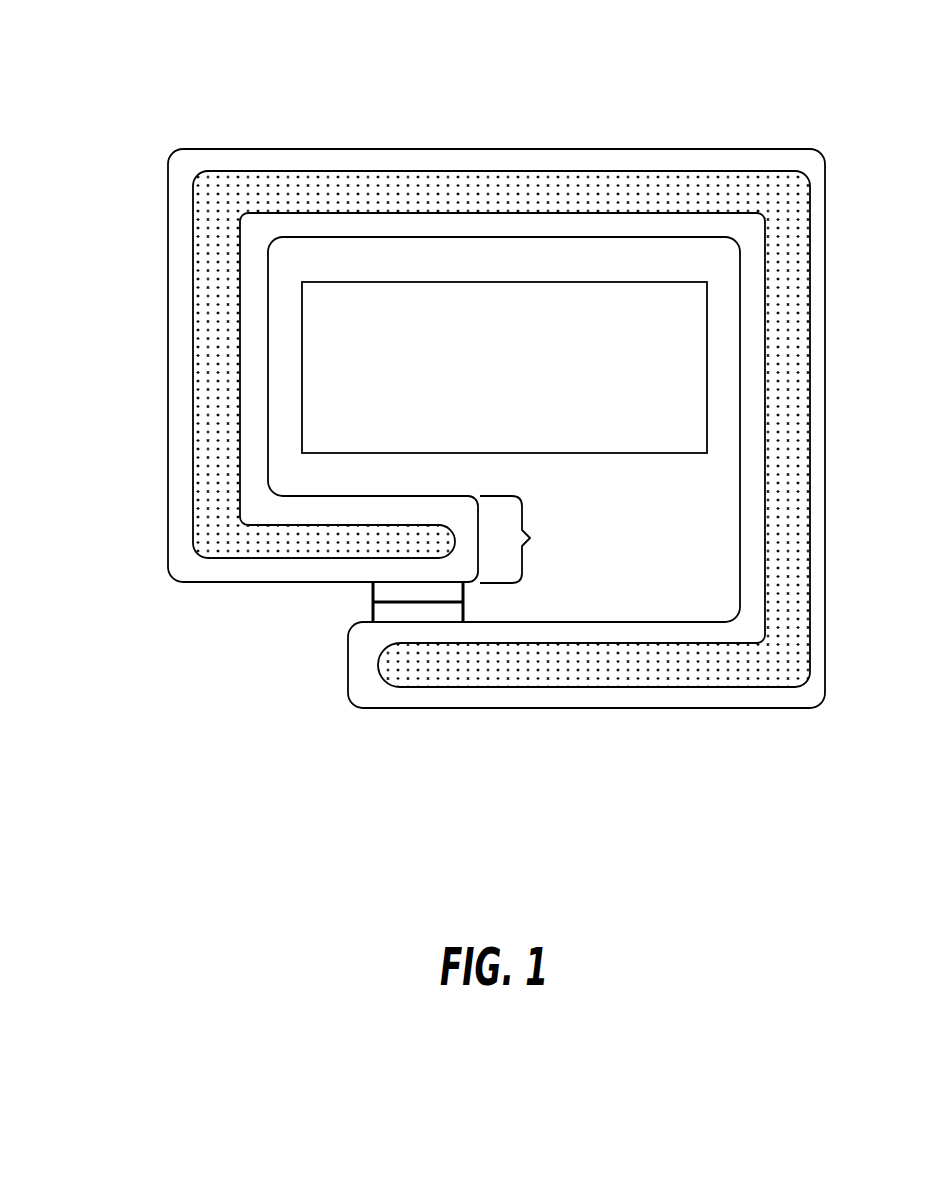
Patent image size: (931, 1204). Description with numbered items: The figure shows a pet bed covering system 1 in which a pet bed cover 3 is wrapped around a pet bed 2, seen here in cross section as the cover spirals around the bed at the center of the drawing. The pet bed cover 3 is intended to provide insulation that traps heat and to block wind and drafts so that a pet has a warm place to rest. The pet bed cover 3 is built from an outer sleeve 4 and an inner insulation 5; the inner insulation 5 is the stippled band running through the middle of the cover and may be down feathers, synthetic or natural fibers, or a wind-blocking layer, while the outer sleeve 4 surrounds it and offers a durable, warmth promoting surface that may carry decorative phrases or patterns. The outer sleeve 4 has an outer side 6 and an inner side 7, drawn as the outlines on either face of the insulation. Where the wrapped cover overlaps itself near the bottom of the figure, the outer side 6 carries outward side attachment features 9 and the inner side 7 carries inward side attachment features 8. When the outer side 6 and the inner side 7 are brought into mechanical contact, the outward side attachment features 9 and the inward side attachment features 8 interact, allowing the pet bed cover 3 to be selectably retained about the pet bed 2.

The pet bed covering system 1 is at (664, 80).
The pet bed 2 is at (518, 392).
The pet bed cover 3 is at (518, 539).
The outer sleeve 4 is at (362, 670).
The inner insulation 5 is at (213, 263).
The outer side 6 is at (167, 385).
The inner side 7 is at (268, 363).
The inward side attachment features 8 is at (422, 609).
The outward side attachment features 9 is at (453, 592).